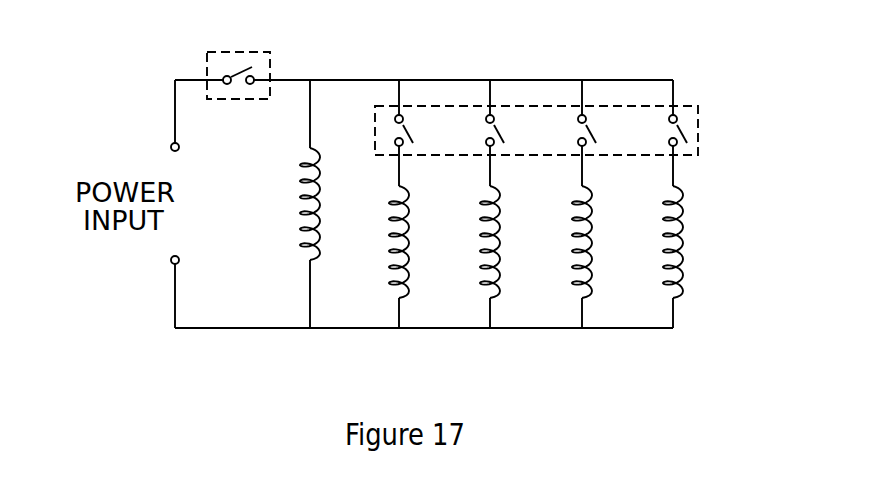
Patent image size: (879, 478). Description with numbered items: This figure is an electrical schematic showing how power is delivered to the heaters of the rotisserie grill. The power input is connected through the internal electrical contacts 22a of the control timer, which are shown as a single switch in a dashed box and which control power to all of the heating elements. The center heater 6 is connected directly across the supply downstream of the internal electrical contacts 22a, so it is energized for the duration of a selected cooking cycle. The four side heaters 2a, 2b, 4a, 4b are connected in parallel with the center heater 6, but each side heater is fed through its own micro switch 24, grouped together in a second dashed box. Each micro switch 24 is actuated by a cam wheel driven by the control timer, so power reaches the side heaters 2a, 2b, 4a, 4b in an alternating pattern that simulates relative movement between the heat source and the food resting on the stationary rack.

The internal electrical contacts 22a is at (225, 72).
The micro switch 24 is at (410, 128).
The center heater 6 is at (305, 225).
The side heater 2a is at (408, 275).
The side heater 2b is at (499, 275).
The side heater 4a is at (591, 275).
The side heater 4b is at (682, 275).